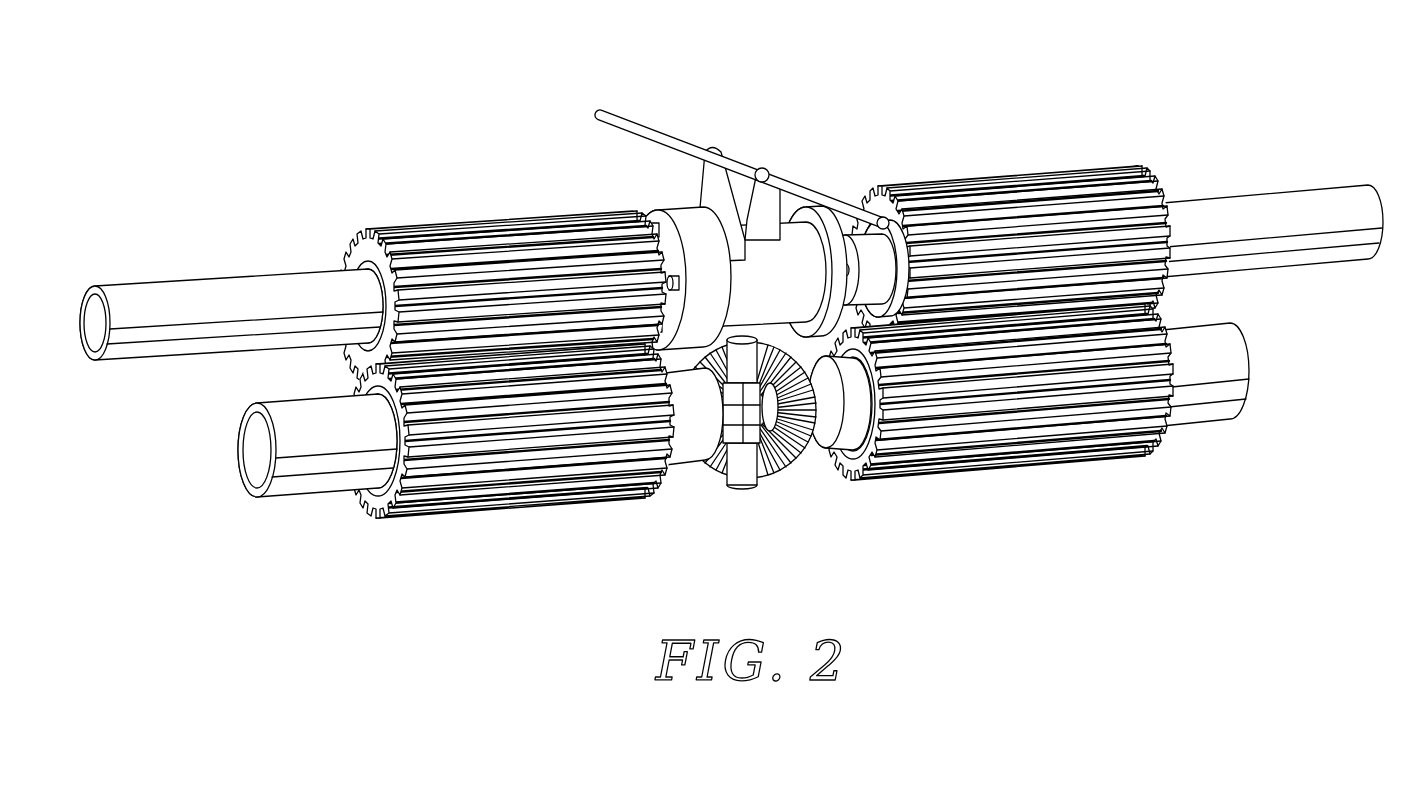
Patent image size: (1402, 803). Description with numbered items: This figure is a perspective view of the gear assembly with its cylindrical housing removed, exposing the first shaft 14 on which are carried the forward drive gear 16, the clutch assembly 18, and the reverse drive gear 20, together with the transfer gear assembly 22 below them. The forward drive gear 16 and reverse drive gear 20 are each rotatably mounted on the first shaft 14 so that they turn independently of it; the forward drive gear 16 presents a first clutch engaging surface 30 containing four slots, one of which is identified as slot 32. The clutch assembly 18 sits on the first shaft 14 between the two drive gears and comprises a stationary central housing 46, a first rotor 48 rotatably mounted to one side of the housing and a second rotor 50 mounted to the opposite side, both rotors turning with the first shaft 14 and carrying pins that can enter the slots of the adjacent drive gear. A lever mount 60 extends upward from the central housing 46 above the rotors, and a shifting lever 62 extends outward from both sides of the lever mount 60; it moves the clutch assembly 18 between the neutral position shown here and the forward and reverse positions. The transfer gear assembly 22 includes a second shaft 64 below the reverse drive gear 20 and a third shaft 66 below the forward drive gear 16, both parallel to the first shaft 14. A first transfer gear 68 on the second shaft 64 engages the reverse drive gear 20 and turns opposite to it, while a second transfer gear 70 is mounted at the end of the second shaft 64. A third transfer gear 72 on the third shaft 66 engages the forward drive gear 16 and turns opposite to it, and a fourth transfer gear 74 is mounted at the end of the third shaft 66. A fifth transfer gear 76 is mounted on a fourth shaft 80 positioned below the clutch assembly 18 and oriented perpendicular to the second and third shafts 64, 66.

The first shaft 14 is at (1282, 203).
The forward drive gear 16 is at (1013, 176).
The clutch assembly 18 is at (725, 191).
The reverse drive gear 20 is at (445, 222).
The transfer gear assembly 22 is at (760, 431).
The first clutch engaging surface 30 is at (853, 193).
The slot 32 is at (896, 225).
The central housing 46 is at (755, 255).
The first rotor 48 is at (811, 216).
The second rotor 50 is at (688, 215).
The lever mount 60 is at (701, 130).
The shifting lever 62 is at (600, 113).
The second shaft 64 is at (295, 490).
The third shaft 66 is at (1202, 423).
The first transfer gear 68 is at (413, 520).
The second transfer gear 70 is at (700, 475).
The third transfer gear 72 is at (1020, 468).
The fourth transfer gear 74 is at (807, 467).
The fifth transfer gear 76 is at (712, 345).
The fourth shaft 80 is at (748, 487).